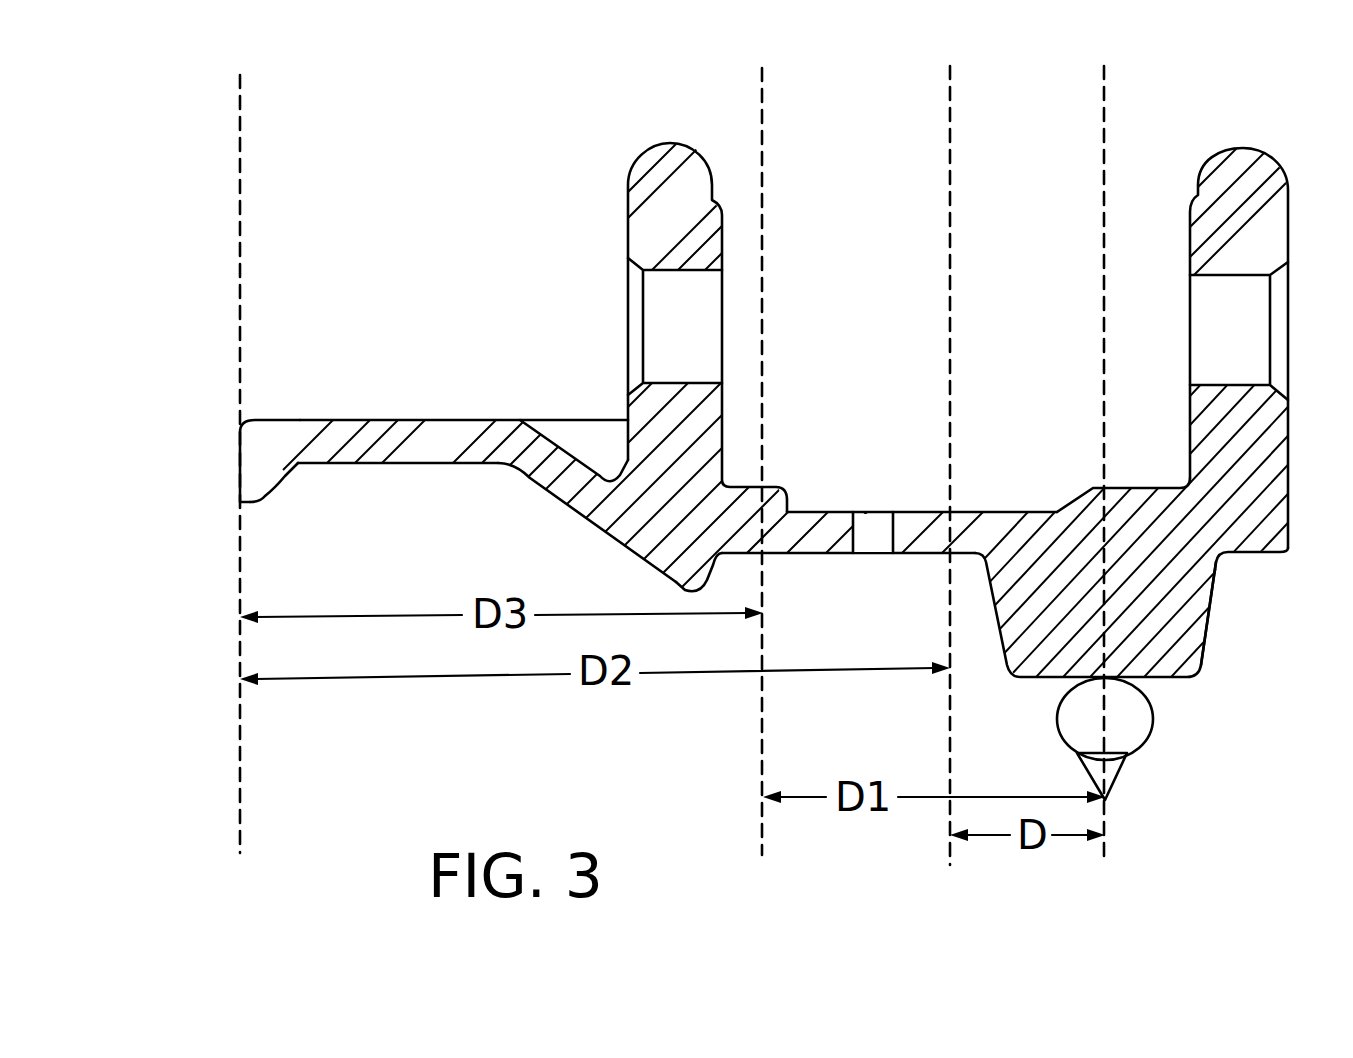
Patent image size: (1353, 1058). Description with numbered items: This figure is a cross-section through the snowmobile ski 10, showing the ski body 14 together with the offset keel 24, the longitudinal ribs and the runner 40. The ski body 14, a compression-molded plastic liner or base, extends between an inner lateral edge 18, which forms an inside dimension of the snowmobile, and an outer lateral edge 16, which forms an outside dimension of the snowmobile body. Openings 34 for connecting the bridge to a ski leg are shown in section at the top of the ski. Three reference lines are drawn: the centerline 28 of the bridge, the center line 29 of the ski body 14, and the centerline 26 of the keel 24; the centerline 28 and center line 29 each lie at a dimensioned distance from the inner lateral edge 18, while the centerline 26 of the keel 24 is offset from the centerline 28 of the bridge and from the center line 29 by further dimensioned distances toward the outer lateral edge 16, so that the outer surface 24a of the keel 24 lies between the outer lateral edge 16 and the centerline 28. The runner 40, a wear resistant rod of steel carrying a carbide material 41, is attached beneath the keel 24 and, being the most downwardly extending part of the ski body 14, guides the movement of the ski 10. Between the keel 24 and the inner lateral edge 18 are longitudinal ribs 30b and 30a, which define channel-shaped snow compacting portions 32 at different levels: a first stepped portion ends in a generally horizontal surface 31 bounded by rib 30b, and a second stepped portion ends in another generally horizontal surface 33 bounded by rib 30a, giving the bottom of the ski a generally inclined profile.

The ski 10 is at (474, 232).
The ski body 14 is at (700, 476).
The outer lateral edge 16 is at (1260, 483).
The inner lateral edge 18 is at (238, 475).
The keel 24 is at (1150, 640).
The outer surface of the keel 24a is at (1218, 587).
The centerline of the keel 26 is at (1104, 158).
The centerline of the bridge 28 is at (950, 160).
The center line of the ski body 29 is at (764, 157).
The longitudinal rib 30a is at (256, 480).
The longitudinal rib 30b is at (665, 574).
The generally horizontal surface 31 is at (797, 556).
The snow compacting portions 32 is at (358, 520).
The generally horizontal surface 33 is at (410, 465).
The openings 34 is at (687, 307).
The runner 40 is at (1128, 715).
The carbide material 41 is at (1112, 765).